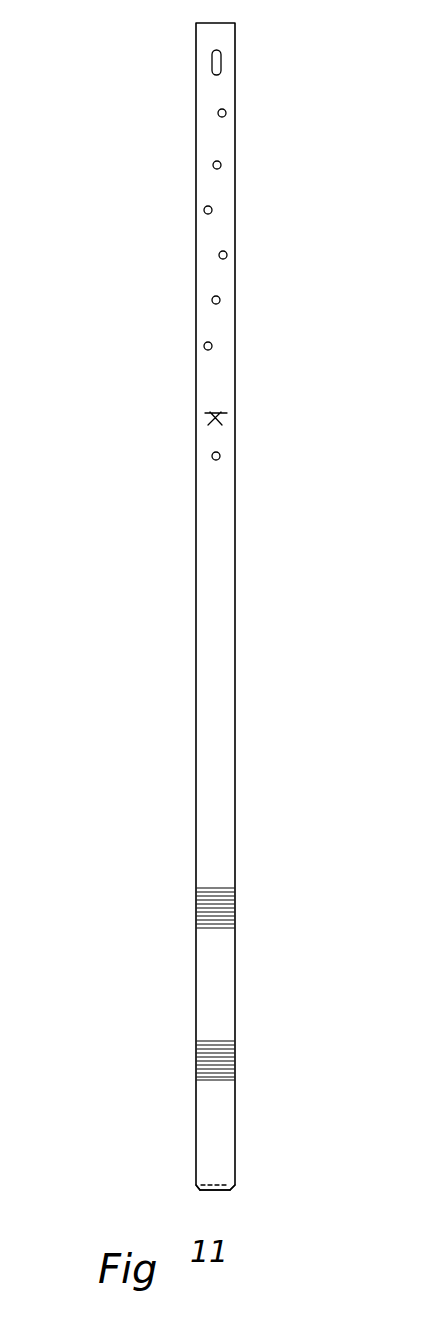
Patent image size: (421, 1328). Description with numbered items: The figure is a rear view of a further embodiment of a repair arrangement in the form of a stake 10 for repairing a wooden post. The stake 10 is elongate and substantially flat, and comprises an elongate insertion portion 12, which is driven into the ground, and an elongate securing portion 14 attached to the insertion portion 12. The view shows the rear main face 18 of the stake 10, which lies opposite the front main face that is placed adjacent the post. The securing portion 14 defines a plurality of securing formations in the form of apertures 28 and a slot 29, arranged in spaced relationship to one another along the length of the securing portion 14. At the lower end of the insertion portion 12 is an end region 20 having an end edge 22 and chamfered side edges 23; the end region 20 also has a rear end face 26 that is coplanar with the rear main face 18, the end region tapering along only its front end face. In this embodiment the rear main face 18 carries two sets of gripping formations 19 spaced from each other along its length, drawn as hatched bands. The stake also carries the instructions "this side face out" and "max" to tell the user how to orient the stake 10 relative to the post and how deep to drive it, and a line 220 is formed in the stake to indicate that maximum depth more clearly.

The stake 10 is at (168, 291).
The insertion portion 12 is at (195, 976).
The securing portion 14 is at (236, 238).
The rear main face 18 is at (207, 495).
The gripping formations 19 is at (238, 905).
The end region 20 is at (203, 1193).
The end edge 22 is at (210, 1195).
The chamfered side edges 23 is at (192, 1190).
The rear end face 26 is at (215, 1190).
The apertures 28 is at (204, 210).
The slots 29 is at (220, 68).
The line 220 is at (218, 414).